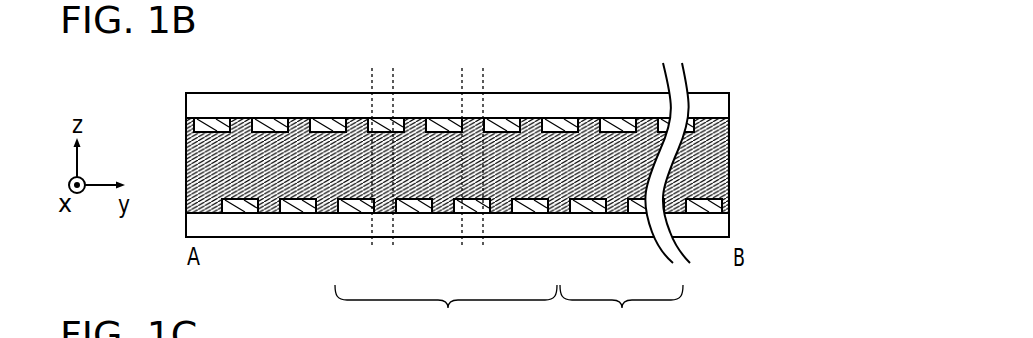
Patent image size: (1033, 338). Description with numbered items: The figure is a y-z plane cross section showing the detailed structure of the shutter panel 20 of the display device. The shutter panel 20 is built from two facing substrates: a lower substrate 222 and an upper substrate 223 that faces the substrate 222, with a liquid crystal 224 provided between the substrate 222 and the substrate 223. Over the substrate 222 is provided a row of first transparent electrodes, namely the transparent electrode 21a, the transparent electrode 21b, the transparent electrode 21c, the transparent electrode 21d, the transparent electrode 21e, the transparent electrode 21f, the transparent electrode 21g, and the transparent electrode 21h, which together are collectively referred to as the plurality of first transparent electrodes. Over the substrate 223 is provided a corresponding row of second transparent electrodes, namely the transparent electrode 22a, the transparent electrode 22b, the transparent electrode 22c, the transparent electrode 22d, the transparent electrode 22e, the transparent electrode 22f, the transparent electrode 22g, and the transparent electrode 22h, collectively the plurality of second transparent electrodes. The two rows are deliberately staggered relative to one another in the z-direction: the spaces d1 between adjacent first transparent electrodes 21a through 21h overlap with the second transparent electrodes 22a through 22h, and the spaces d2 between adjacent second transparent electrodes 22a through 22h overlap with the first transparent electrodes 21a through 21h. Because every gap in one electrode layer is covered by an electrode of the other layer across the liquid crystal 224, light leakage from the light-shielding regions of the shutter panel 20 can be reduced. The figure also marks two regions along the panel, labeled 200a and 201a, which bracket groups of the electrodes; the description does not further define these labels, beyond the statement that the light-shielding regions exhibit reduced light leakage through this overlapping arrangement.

The shutter panel 20 is at (738, 93).
The substrate 222 is at (204, 231).
The substrate 223 is at (207, 105).
The liquid crystal 224 is at (186, 165).
The transparent electrode 22a is at (213, 118).
The transparent electrode 22b is at (270, 118).
The transparent electrode 22c is at (330, 118).
The transparent electrode 22d is at (393, 118).
The transparent electrode 22e is at (438, 118).
The transparent electrode 22f is at (498, 118).
The transparent electrode 22g is at (560, 118).
The transparent electrode 22h is at (612, 118).
The transparent electrode 21a is at (243, 213).
The transparent electrode 21b is at (298, 213).
The transparent electrode 21c is at (358, 213).
The transparent electrode 21d is at (413, 213).
The transparent electrode 21e is at (472, 213).
The transparent electrode 21f is at (528, 213).
The transparent electrode 21g is at (587, 213).
The transparent electrode 21h is at (640, 213).
The space between first transparent electrodes d1 is at (413, 73).
The space between second transparent electrodes d2 is at (500, 73).
The first region 200a is at (446, 311).
The second region 201a is at (621, 311).